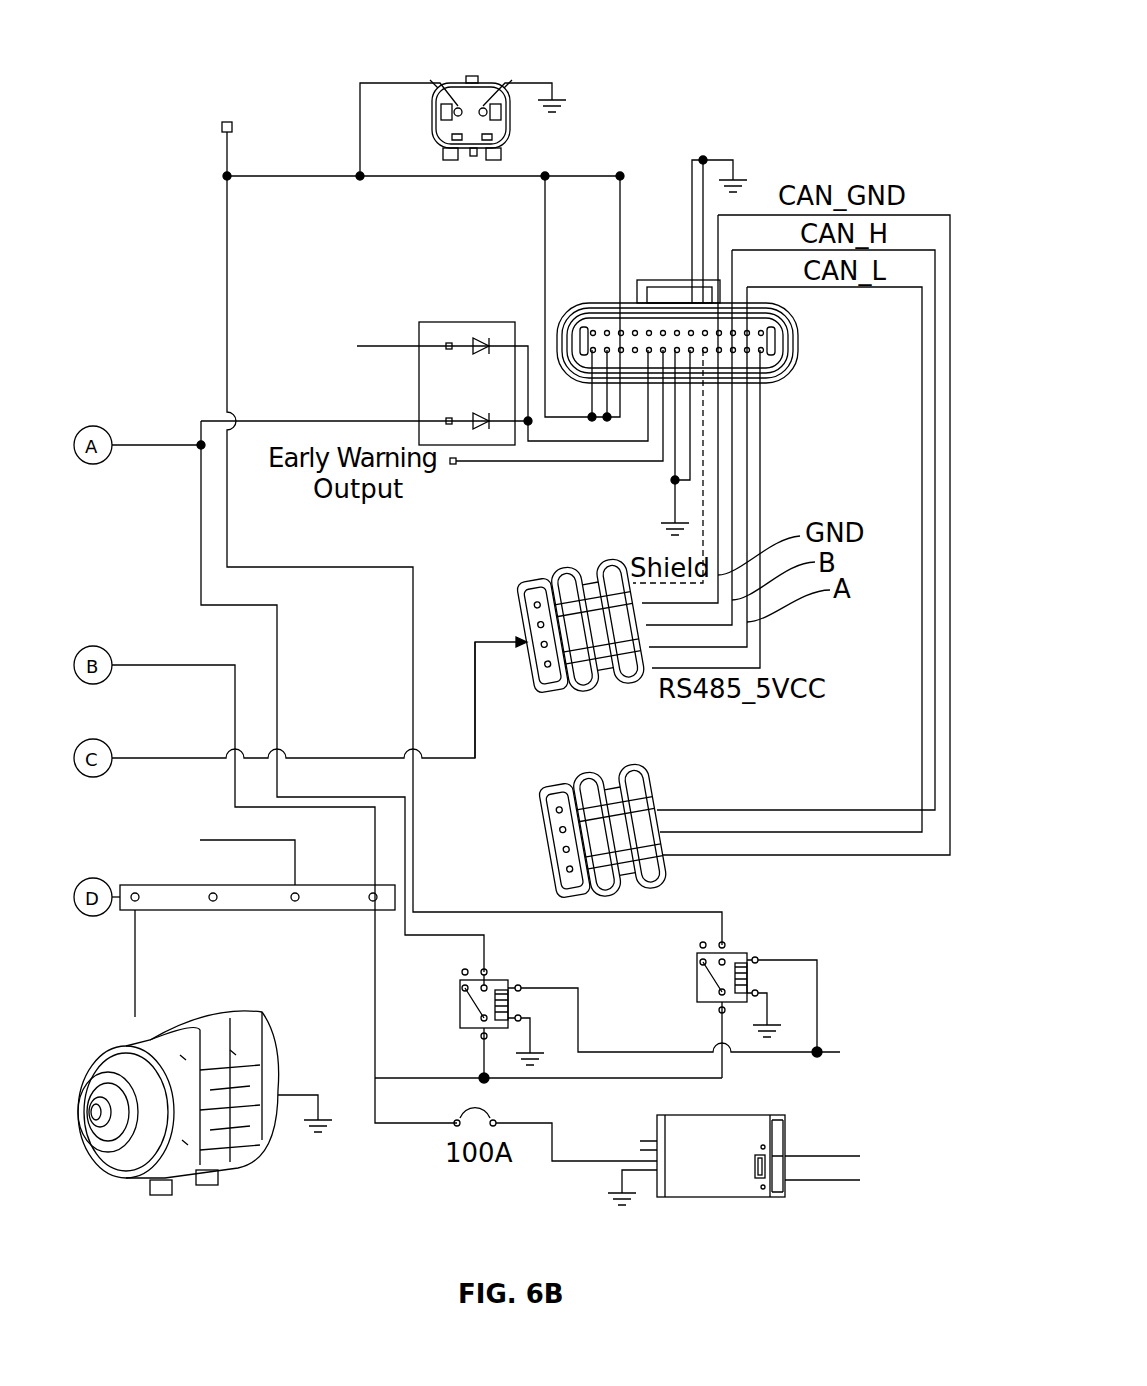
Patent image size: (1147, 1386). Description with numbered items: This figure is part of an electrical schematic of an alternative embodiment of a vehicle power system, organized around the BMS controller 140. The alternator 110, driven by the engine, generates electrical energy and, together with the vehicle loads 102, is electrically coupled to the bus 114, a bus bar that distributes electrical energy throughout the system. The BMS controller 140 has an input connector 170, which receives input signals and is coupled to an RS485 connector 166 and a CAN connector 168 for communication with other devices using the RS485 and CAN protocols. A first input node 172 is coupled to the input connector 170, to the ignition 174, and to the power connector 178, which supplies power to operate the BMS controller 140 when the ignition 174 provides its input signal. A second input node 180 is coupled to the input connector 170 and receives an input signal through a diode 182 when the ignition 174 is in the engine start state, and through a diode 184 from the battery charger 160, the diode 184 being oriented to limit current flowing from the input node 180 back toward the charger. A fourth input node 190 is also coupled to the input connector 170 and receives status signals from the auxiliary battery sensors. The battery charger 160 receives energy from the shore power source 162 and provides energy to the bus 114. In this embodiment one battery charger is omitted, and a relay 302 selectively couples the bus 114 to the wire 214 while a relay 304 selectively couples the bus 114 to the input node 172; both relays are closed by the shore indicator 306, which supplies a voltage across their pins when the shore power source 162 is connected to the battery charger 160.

The BMS controller 140 is at (482, 25).
The ignition 174 is at (233, 126).
The input node 172 is at (232, 174).
The power connector 178 is at (512, 125).
The input node 180 is at (546, 306).
The diode 182 is at (480, 336).
The diode 184 is at (487, 412).
The input connector 170 is at (800, 352).
The wire 214 is at (202, 570).
The RS485 connector 166 is at (585, 693).
The CAN connector 168 is at (668, 862).
The input node 190 is at (478, 742).
The vehicle loads 102 is at (200, 840).
The bus 114 is at (132, 908).
The alternator 110 is at (262, 1028).
The relay 302 is at (486, 978).
The relay 304 is at (740, 953).
The shore indicator 306 is at (818, 1058).
The battery charger 160 is at (786, 1190).
The shore power source 162 is at (855, 1180).